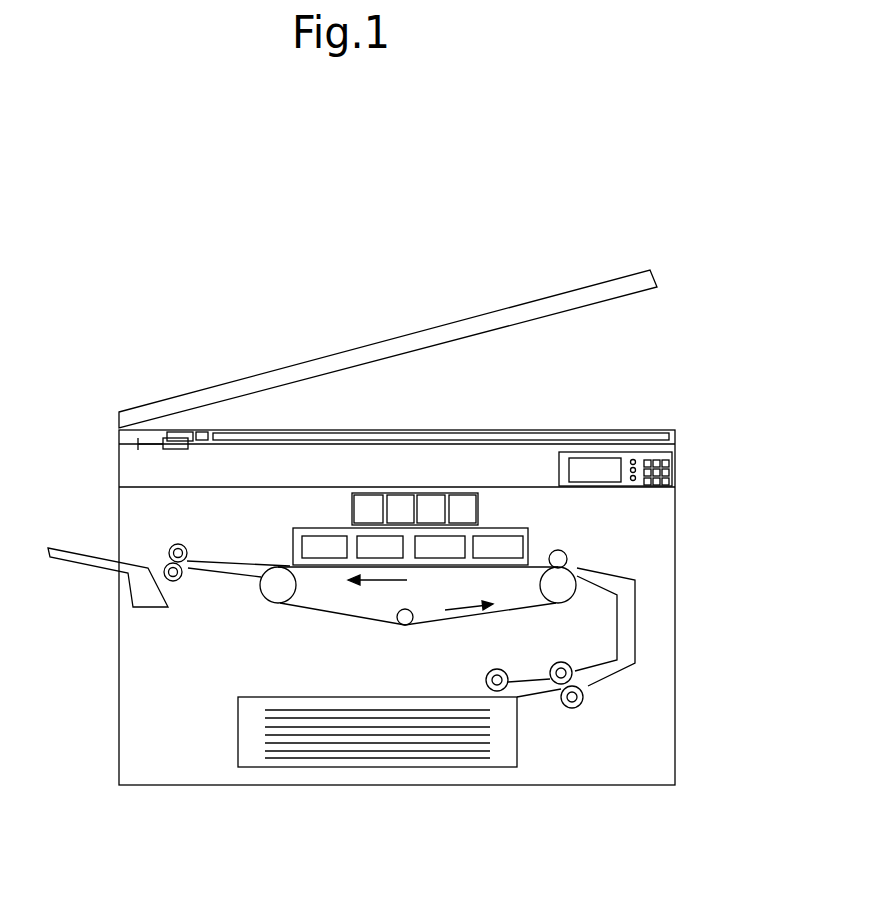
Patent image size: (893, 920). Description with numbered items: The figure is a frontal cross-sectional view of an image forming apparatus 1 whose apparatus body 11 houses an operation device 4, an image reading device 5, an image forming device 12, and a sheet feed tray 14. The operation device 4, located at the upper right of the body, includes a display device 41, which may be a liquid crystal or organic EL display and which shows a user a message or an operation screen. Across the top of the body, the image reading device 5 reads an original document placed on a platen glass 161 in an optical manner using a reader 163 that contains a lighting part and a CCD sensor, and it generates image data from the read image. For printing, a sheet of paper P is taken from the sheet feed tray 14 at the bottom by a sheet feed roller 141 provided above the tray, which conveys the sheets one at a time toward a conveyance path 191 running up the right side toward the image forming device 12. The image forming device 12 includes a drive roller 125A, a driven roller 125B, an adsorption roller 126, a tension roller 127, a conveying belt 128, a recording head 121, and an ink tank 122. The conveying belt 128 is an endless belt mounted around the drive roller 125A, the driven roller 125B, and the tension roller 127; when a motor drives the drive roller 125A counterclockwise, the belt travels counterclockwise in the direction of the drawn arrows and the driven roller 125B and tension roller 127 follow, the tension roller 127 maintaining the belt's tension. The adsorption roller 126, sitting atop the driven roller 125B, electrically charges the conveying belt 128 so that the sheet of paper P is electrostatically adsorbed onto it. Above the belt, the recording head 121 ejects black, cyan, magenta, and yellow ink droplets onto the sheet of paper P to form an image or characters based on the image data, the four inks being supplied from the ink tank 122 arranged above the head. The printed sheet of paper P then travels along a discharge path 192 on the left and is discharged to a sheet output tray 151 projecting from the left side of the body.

The image forming apparatus 1 is at (228, 276).
The operation device 4 is at (675, 463).
The image reading device 5 is at (117, 463).
The apparatus body 11 is at (675, 535).
The image forming device 12 is at (280, 525).
The sheet feed tray 14 is at (238, 715).
The display device 41 is at (594, 465).
The recording head 121 is at (530, 531).
The ink tank 122 is at (480, 505).
The drive roller 125A is at (272, 593).
The driven roller 125B is at (562, 593).
The adsorption roller 126 is at (567, 557).
The tension roller 127 is at (408, 623).
The conveying belt 128 is at (318, 612).
The sheet feed roller 141 is at (485, 680).
The sheet output tray 151 is at (72, 548).
The platen glass 161 is at (515, 430).
The reader 163 is at (178, 449).
The conveyance path 191 is at (613, 673).
The discharge path 192 is at (215, 573).
The sheet of paper P is at (410, 734).